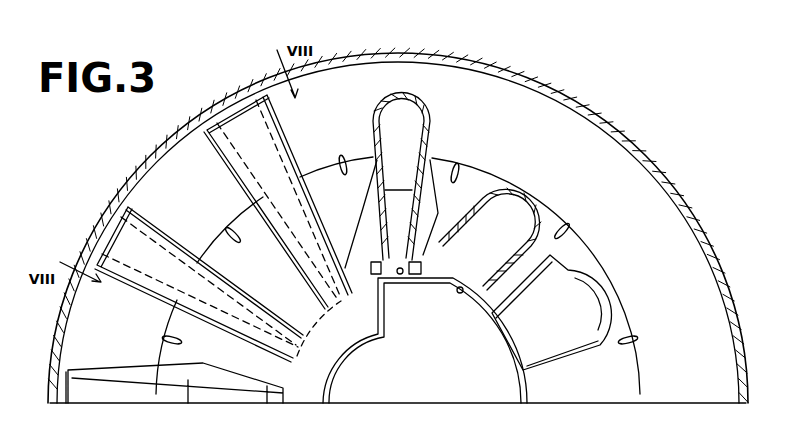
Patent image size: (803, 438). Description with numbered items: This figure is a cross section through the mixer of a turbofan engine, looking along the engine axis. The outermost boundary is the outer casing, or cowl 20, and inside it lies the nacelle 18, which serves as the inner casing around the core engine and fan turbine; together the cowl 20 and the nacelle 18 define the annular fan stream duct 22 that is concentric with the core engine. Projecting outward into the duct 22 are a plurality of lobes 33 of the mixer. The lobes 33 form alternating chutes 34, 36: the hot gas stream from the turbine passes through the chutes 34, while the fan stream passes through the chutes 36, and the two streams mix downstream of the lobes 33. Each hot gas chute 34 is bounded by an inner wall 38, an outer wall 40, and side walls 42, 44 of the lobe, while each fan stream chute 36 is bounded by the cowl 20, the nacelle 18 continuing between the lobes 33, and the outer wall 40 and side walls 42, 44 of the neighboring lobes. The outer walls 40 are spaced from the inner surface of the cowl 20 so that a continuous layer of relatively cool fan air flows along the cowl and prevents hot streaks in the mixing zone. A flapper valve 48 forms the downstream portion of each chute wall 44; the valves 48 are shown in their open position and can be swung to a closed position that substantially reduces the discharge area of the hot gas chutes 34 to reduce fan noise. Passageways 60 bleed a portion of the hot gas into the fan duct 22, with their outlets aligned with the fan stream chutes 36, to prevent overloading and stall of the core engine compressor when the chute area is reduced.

The nacelle 18 is at (598, 250).
The outer casing 20 is at (657, 160).
The duct 22 is at (686, 365).
The lobes 33 is at (156, 211).
The chutes 34 is at (133, 261).
The chutes 36 is at (90, 356).
The inner wall 38 is at (490, 300).
The outer wall 40 is at (113, 238).
The side wall 42 is at (230, 337).
The side wall 44 is at (253, 288).
The flapper valve 48 is at (319, 328).
The passageways 60 is at (343, 160).